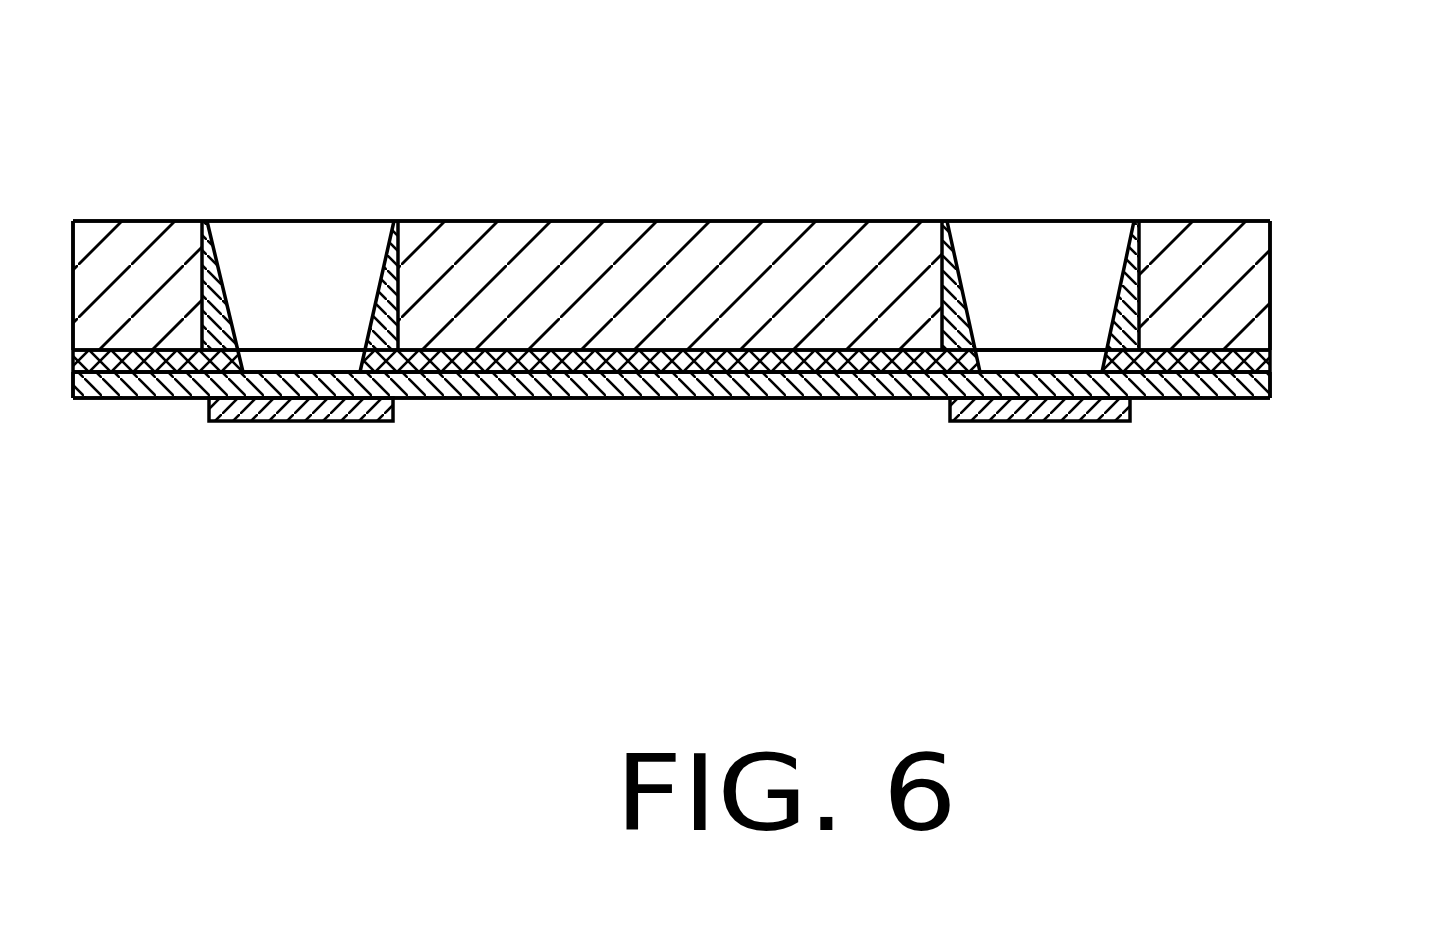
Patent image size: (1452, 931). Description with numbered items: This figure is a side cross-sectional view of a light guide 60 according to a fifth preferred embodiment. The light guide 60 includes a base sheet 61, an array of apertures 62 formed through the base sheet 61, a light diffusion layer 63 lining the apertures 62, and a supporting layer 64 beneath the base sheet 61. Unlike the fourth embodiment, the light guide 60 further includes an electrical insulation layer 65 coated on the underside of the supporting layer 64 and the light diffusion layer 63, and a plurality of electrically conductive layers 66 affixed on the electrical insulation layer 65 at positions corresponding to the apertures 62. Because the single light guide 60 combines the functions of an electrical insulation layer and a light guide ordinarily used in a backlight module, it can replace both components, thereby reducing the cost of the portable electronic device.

The light guide 60 is at (692, 93).
The base sheet 61 is at (1242, 310).
The apertures 62 is at (1025, 257).
The light diffusion layer 63 is at (952, 275).
The supporting layer 64 is at (1270, 365).
The electrical insulation layer 65 is at (1230, 387).
The electrically conductive layers 66 is at (1050, 415).